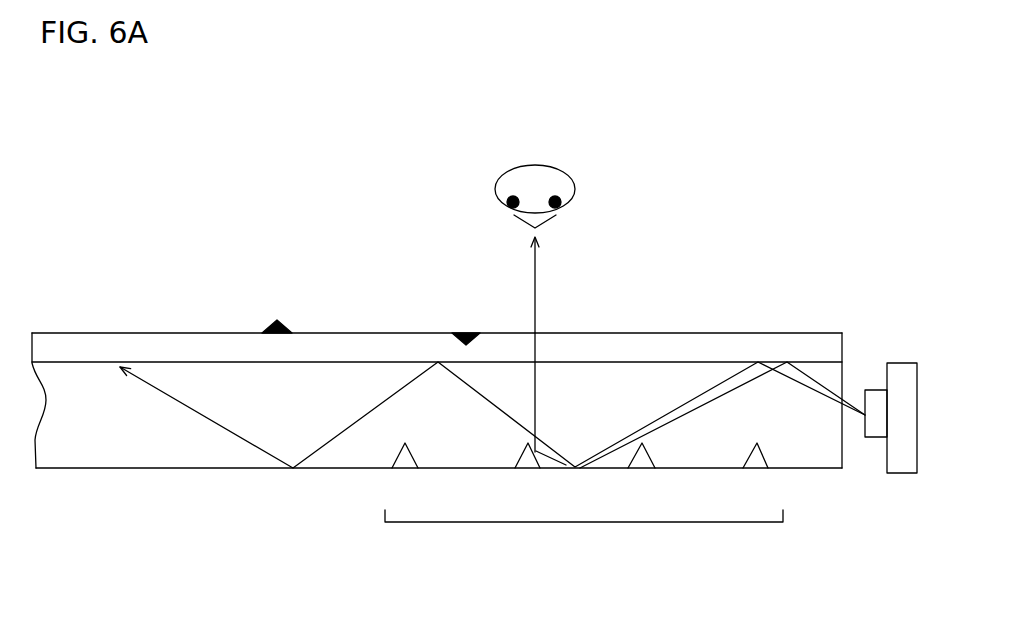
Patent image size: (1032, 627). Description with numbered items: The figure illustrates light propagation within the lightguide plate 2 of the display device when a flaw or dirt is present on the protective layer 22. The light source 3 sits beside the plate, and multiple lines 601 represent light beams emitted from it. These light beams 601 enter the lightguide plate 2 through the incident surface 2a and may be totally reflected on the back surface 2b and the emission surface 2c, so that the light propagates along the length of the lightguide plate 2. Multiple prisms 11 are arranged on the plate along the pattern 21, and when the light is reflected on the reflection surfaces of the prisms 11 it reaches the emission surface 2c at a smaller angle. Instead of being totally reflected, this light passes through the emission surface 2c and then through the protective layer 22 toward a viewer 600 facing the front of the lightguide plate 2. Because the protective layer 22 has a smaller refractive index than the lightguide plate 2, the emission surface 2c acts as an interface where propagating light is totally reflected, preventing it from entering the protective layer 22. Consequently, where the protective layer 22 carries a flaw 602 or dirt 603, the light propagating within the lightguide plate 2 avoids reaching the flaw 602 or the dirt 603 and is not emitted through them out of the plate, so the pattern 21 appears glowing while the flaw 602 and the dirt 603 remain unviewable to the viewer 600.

The lightguide plate 2 is at (68, 458).
The incident surface 2a is at (843, 452).
The back surface 2b is at (138, 470).
The emission surface 2c is at (655, 362).
The light source 3 is at (903, 465).
The prism 11 is at (527, 458).
The pattern 21 is at (583, 522).
The protective layer 22 is at (843, 350).
The viewer 600 is at (577, 192).
The light beam 601 is at (537, 297).
The flaw 602 is at (463, 333).
The dirt 603 is at (272, 323).